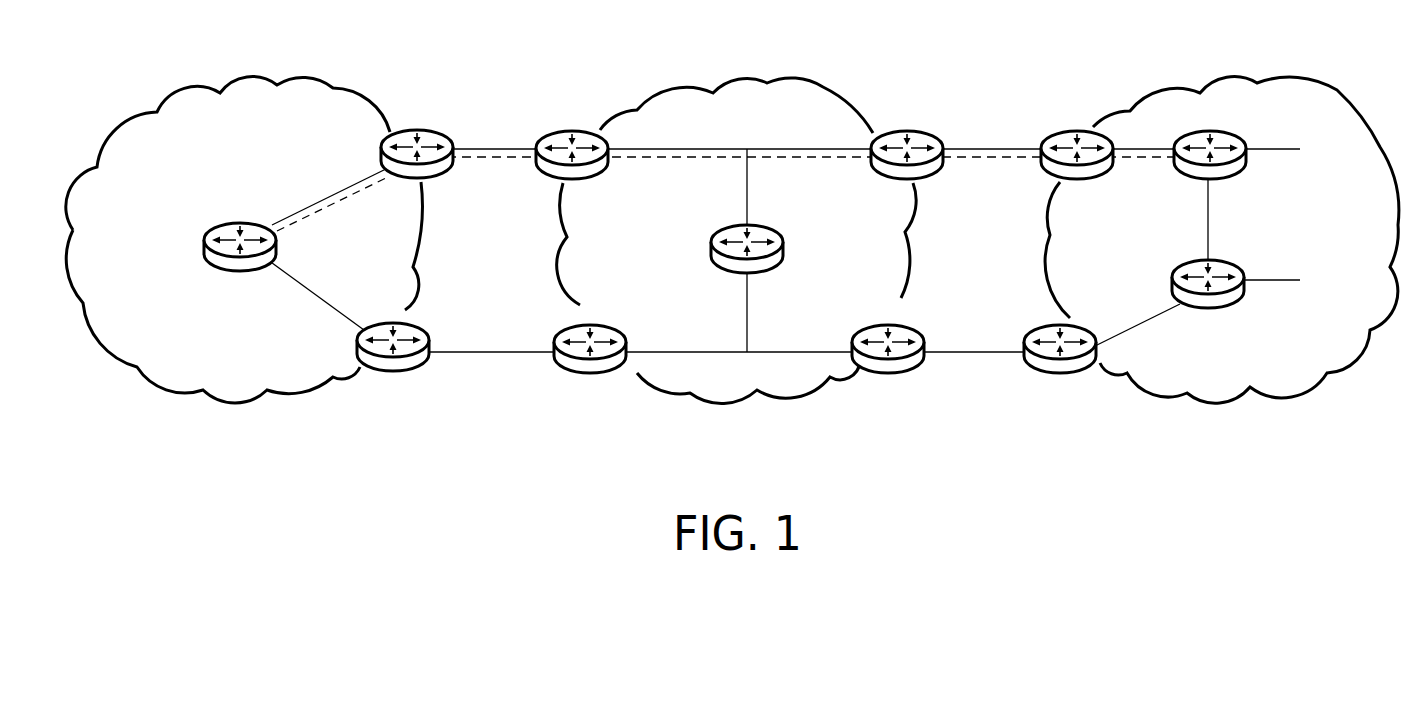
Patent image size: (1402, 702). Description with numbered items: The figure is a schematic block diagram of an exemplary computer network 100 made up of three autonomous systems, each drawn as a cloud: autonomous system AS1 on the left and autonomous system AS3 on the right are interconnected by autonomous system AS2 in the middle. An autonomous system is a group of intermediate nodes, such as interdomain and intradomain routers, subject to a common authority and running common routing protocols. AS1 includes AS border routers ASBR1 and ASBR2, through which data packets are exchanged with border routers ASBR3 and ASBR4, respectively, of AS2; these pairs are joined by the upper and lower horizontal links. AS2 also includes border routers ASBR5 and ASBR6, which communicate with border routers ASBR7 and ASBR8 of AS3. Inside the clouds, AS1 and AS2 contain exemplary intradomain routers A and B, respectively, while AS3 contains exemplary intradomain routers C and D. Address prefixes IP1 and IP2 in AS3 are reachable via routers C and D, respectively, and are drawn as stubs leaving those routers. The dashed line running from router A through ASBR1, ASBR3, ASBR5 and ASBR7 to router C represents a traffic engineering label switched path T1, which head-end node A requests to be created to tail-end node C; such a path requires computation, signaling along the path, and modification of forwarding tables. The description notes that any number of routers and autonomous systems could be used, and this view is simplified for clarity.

The computer network 100 is at (732, 330).
The intradomain router A is at (215, 252).
The intradomain router B is at (768, 247).
The intradomain router C is at (1222, 137).
The intradomain router D is at (1189, 279).
The AS border router ASBR1 is at (429, 122).
The AS border router ASBR2 is at (382, 375).
The AS border router ASBR3 is at (574, 122).
The AS border router ASBR4 is at (585, 376).
The AS border router ASBR5 is at (919, 122).
The AS border router ASBR6 is at (896, 376).
The AS border router ASBR7 is at (1069, 122).
The AS border router ASBR8 is at (1063, 376).
The TE-LSP T1 is at (353, 193).
The autonomous system AS1 is at (244, 240).
The autonomous system AS2 is at (736, 241).
The autonomous system AS3 is at (1222, 240).
The address prefix IP1 is at (1313, 140).
The address prefix IP2 is at (1313, 271).